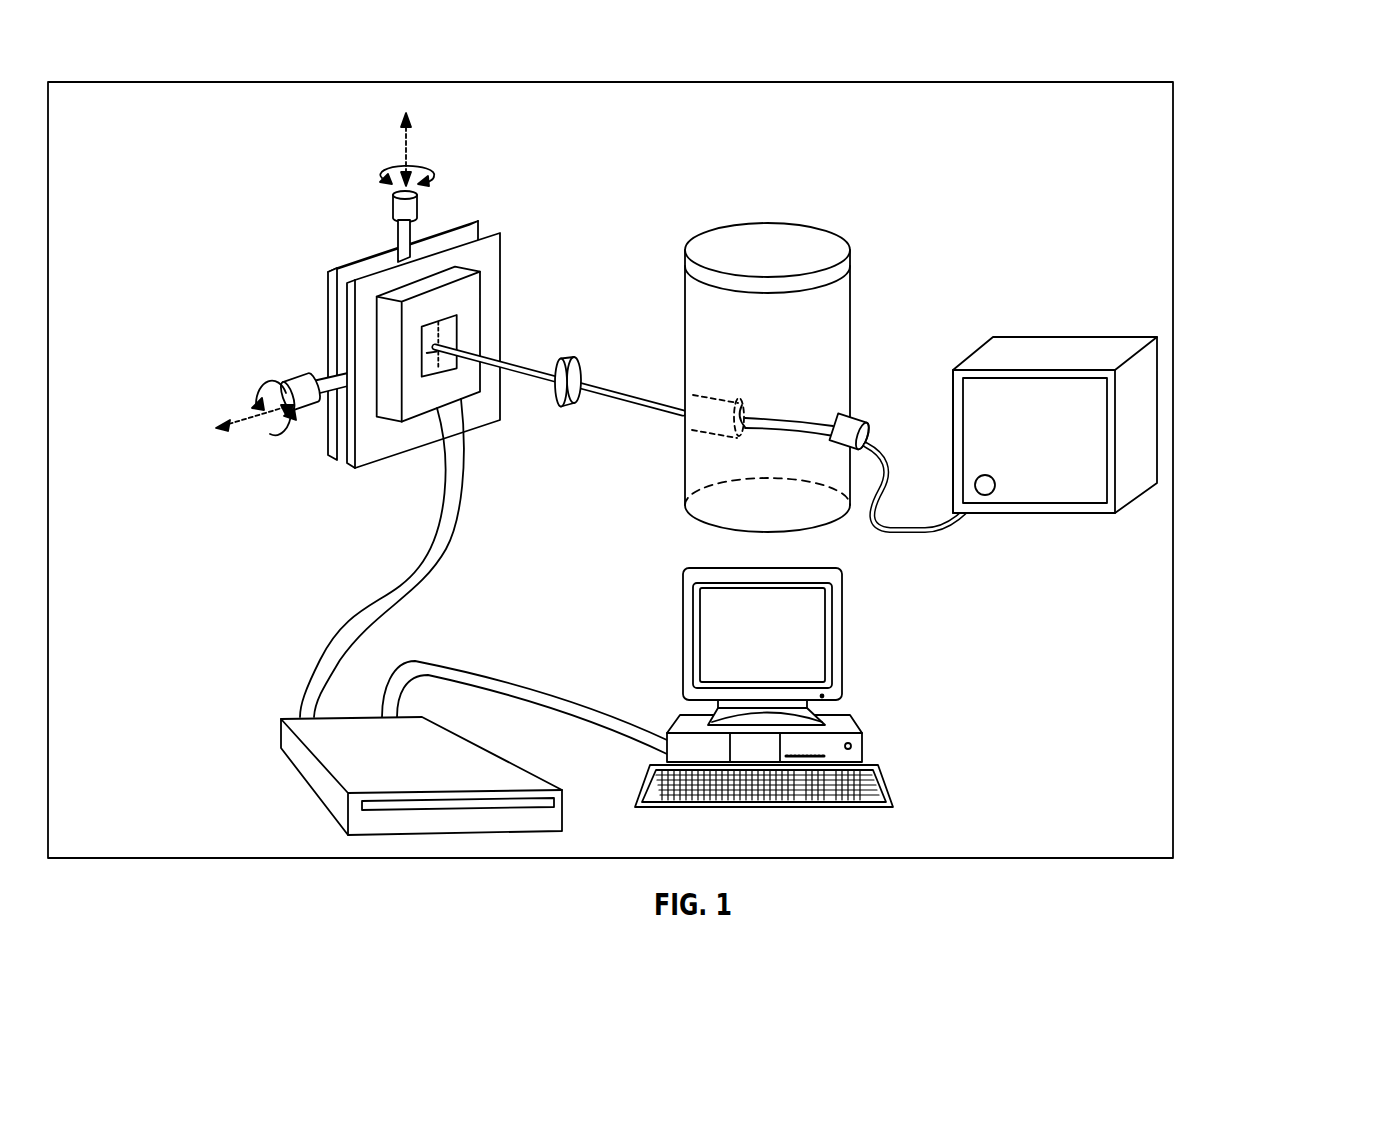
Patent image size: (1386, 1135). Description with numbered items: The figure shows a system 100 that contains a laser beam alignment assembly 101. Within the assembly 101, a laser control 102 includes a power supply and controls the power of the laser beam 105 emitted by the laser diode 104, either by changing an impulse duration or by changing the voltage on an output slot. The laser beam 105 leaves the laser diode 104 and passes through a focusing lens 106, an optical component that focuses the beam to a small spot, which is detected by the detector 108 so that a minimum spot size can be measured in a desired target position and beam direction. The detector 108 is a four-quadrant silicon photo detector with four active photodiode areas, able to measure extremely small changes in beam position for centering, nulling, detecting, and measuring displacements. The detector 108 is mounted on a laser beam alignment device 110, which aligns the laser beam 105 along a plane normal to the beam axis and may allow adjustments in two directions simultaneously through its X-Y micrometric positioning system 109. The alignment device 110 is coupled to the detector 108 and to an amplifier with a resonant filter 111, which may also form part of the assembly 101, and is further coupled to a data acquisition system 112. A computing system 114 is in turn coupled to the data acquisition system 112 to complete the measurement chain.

The system 100 is at (1281, 183).
The laser beam alignment assembly 101 is at (1173, 710).
The laser control 102 is at (1055, 416).
The laser diode 104 is at (787, 331).
The laser beam 105 is at (620, 395).
The focusing lens 106 is at (550, 402).
The detector 108 is at (453, 313).
The X-Y micrometric positioning system 109 is at (391, 210).
The laser beam alignment device 110 is at (328, 347).
The amplifier with resonant filter 111 is at (392, 418).
The data acquisition system 112 is at (281, 719).
The computing system 114 is at (864, 750).